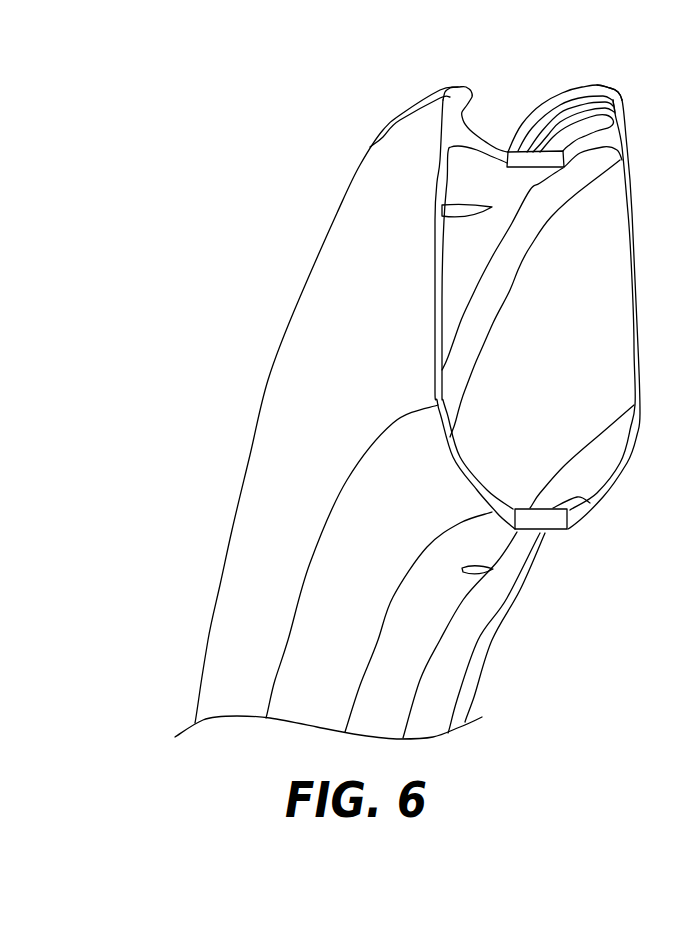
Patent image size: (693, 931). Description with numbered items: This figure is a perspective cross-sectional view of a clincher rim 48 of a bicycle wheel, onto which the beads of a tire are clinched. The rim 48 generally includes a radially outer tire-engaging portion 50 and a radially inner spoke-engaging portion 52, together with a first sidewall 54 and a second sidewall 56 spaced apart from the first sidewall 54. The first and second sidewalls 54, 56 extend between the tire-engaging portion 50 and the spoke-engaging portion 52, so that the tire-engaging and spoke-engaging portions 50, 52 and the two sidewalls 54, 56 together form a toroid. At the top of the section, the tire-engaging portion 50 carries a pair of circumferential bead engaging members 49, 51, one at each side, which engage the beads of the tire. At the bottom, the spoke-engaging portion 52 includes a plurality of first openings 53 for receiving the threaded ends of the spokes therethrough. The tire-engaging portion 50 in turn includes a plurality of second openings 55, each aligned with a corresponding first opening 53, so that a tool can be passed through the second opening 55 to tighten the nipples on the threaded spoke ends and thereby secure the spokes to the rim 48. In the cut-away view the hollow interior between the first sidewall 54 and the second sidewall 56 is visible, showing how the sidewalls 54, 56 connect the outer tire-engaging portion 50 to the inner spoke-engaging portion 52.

The rim 48 is at (245, 367).
The bead engaging member 49 is at (452, 95).
The tire-engaging portion 50 is at (562, 81).
The bead engaging member 51 is at (621, 90).
The spoke-engaging portion 52 is at (608, 513).
The first opening 53 is at (550, 527).
The first sidewall 54 is at (435, 308).
The second opening 55 is at (509, 160).
The second sidewall 56 is at (640, 287).